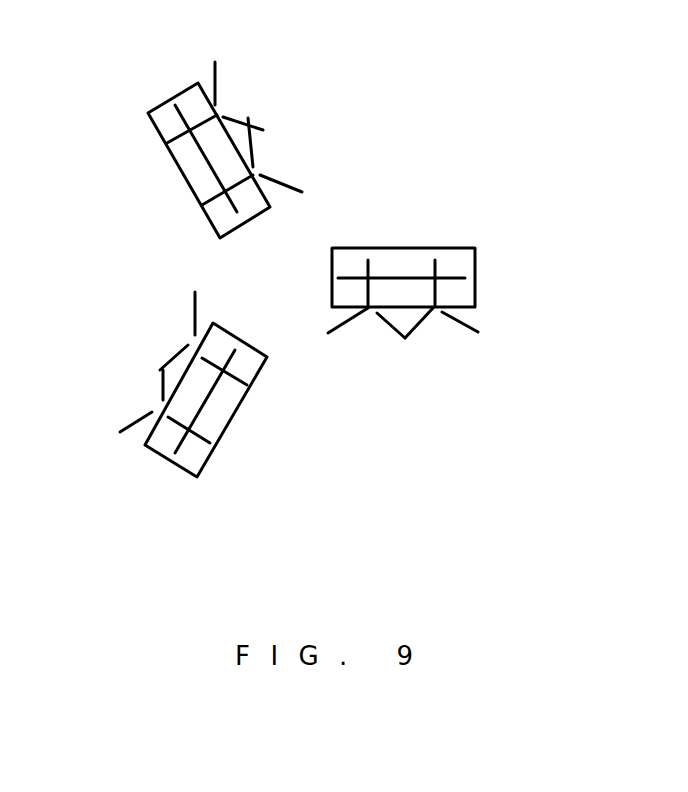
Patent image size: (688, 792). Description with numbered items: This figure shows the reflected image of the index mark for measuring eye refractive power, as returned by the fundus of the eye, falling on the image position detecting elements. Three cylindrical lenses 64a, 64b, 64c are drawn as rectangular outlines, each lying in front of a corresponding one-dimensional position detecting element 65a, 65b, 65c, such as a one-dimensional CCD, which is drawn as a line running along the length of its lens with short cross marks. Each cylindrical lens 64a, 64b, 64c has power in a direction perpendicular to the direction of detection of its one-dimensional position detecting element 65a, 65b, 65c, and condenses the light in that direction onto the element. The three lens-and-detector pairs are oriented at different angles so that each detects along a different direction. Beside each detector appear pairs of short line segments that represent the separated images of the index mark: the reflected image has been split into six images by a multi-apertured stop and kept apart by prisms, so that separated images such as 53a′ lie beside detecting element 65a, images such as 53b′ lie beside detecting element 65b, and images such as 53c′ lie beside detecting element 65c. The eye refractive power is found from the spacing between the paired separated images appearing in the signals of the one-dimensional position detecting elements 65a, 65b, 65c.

The cylindrical lens 64a is at (457, 255).
The cylindrical lens 64b is at (197, 458).
The cylindrical lens 64c is at (168, 120).
The one-dimensional position detecting element 65a is at (465, 277).
The one-dimensional position detecting element 65b is at (178, 442).
The one-dimensional position detecting element 65c is at (183, 105).
The separated image of index mark 53a′ is at (463, 323).
The separated image of index mark 53b′ is at (138, 423).
The separated image of index mark 53c′ is at (230, 117).